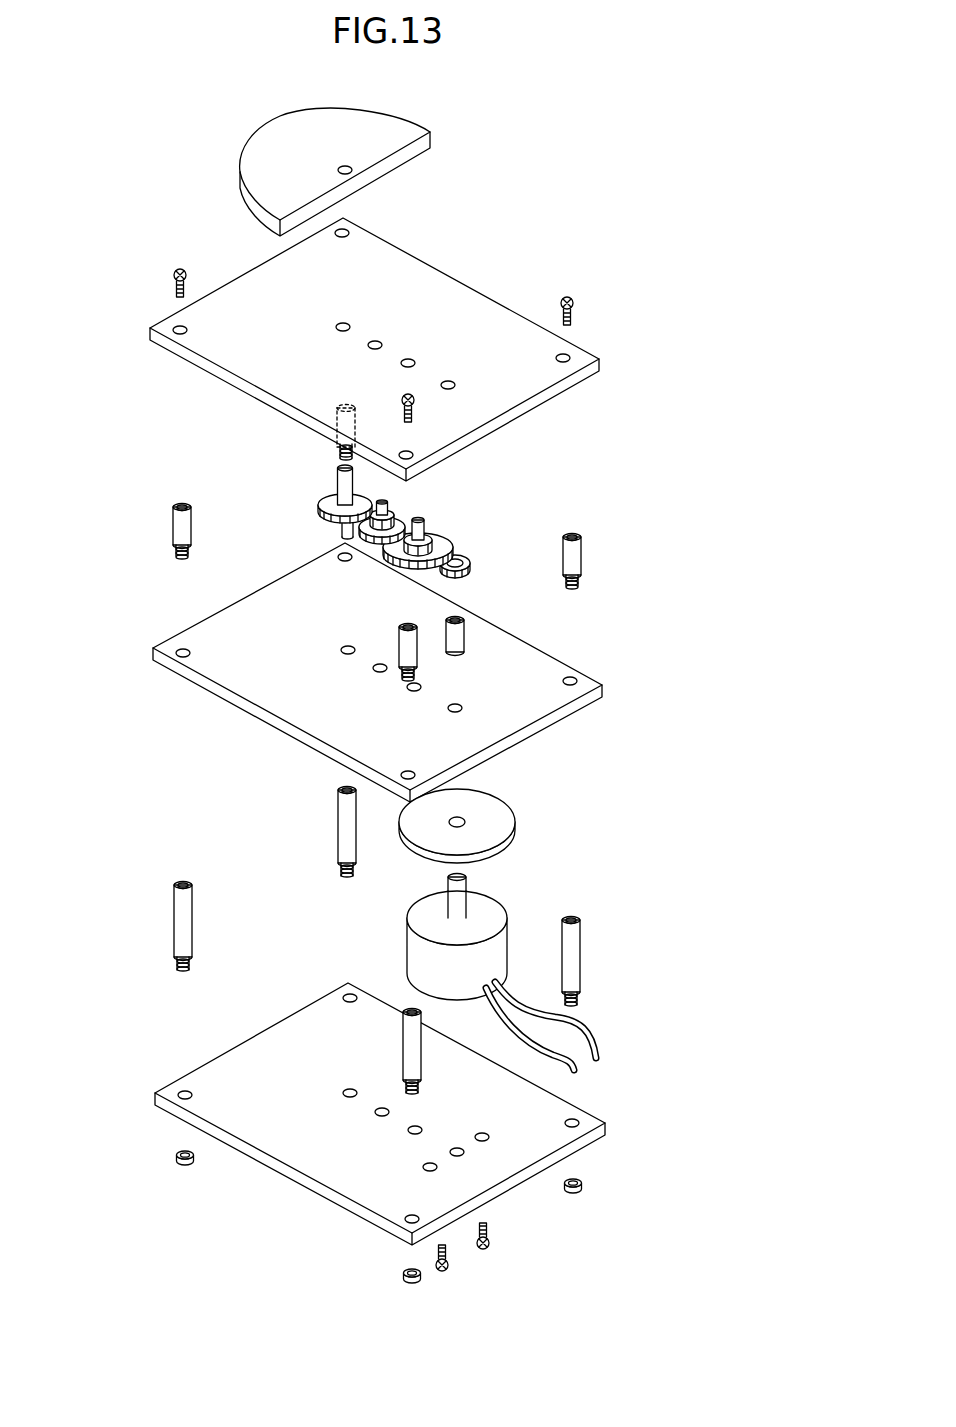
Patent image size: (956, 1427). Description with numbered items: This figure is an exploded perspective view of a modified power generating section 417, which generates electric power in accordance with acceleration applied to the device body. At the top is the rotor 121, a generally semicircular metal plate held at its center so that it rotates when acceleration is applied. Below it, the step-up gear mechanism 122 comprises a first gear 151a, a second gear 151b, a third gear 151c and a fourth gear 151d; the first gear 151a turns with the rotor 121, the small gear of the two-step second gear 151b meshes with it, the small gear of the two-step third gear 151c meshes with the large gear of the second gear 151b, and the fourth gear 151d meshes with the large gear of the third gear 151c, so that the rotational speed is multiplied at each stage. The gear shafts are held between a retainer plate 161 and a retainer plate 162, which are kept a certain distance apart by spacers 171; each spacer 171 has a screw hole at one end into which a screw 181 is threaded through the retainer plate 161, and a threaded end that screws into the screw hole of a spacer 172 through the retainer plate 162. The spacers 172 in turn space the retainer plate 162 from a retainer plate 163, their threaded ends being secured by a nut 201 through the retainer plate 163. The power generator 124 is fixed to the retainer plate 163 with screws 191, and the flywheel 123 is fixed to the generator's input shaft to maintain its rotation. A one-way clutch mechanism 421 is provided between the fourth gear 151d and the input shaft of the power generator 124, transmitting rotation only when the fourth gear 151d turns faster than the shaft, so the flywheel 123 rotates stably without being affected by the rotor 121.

The power generating section 417 is at (125, 117).
The rotor 121 is at (405, 126).
The step-up gear mechanism 122 is at (477, 499).
The first gear 151a is at (366, 495).
The second gear 151b is at (407, 512).
The third gear 151c is at (440, 532).
The fourth gear 151d is at (470, 557).
The flywheel 123 is at (507, 818).
The power generator 124 is at (494, 908).
The retainer plate 161 is at (585, 367).
The retainer plate 162 is at (594, 692).
The retainer plate 163 is at (607, 1127).
The spacer 171 is at (340, 452).
The spacer 172 is at (176, 917).
The screw 181 is at (400, 397).
The screw 191 is at (483, 1254).
The nut 201 is at (190, 1162).
The one-way clutch mechanism 421 is at (463, 630).